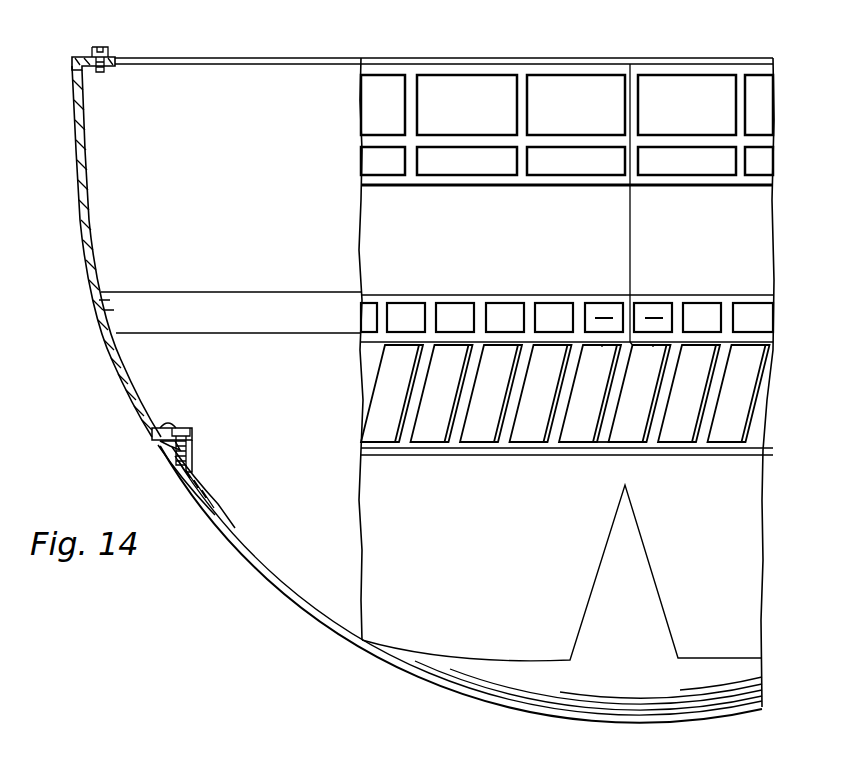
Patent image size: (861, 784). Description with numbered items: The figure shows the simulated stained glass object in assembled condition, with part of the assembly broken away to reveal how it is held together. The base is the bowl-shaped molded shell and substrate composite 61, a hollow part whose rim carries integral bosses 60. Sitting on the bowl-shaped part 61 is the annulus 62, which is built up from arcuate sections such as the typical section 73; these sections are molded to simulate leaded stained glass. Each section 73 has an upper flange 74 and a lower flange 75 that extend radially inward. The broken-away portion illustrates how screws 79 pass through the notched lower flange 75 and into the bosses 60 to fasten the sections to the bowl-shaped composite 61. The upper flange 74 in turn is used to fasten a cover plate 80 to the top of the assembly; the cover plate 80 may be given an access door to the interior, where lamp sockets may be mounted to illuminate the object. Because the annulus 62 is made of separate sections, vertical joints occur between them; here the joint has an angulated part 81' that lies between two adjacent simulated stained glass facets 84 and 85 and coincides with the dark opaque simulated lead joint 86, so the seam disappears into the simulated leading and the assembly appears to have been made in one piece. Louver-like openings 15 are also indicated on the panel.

The louver openings / air passages 15 is at (658, 358).
The integral boss 60 is at (187, 473).
The molded shell and substrate composite 61 is at (233, 573).
The annular part 62 is at (100, 381).
The arcuate section 73 is at (85, 240).
The upper flange 74 is at (88, 56).
The lower flange 75 is at (190, 444).
The screw 79 is at (157, 430).
The cover plate 80 is at (318, 57).
The angulated part of joint 81' is at (564, 468).
The simulated stained glass facet 84 is at (545, 413).
The simulated stained glass facet 85 is at (645, 428).
The simulated lead joint 86 is at (620, 393).